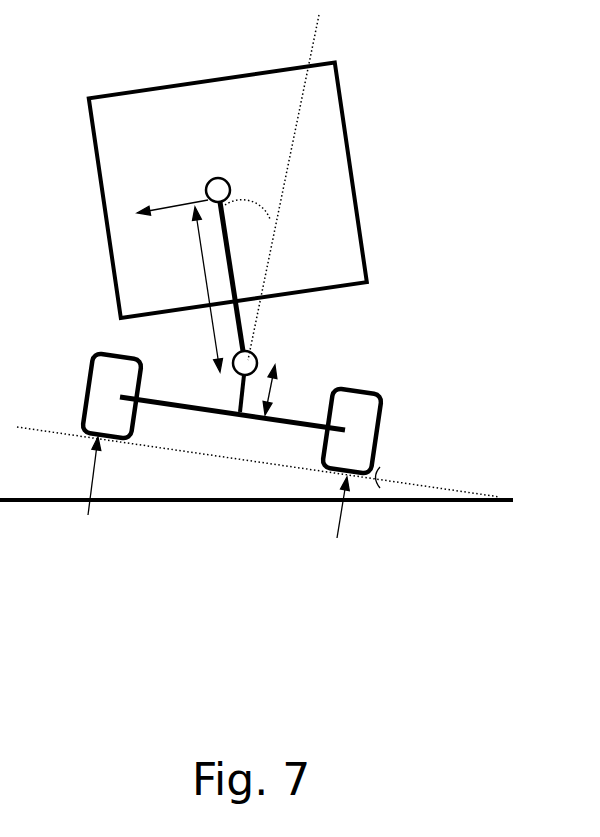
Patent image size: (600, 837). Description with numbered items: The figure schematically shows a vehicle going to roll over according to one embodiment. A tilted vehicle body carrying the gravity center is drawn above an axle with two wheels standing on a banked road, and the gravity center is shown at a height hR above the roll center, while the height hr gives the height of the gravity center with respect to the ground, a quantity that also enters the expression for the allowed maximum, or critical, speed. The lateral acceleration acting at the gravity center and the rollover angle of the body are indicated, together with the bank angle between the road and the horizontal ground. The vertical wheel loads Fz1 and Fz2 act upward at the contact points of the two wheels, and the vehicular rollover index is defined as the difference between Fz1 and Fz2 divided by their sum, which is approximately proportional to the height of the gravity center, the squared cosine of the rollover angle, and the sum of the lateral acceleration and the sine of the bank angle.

The height of the gravity center hR is at (200, 289).
The height of the gravity center with respect to the ground hr is at (283, 367).
The wheel load on the first wheel Fz1 is at (78, 503).
The wheel load on the second wheel Fz2 is at (329, 530).